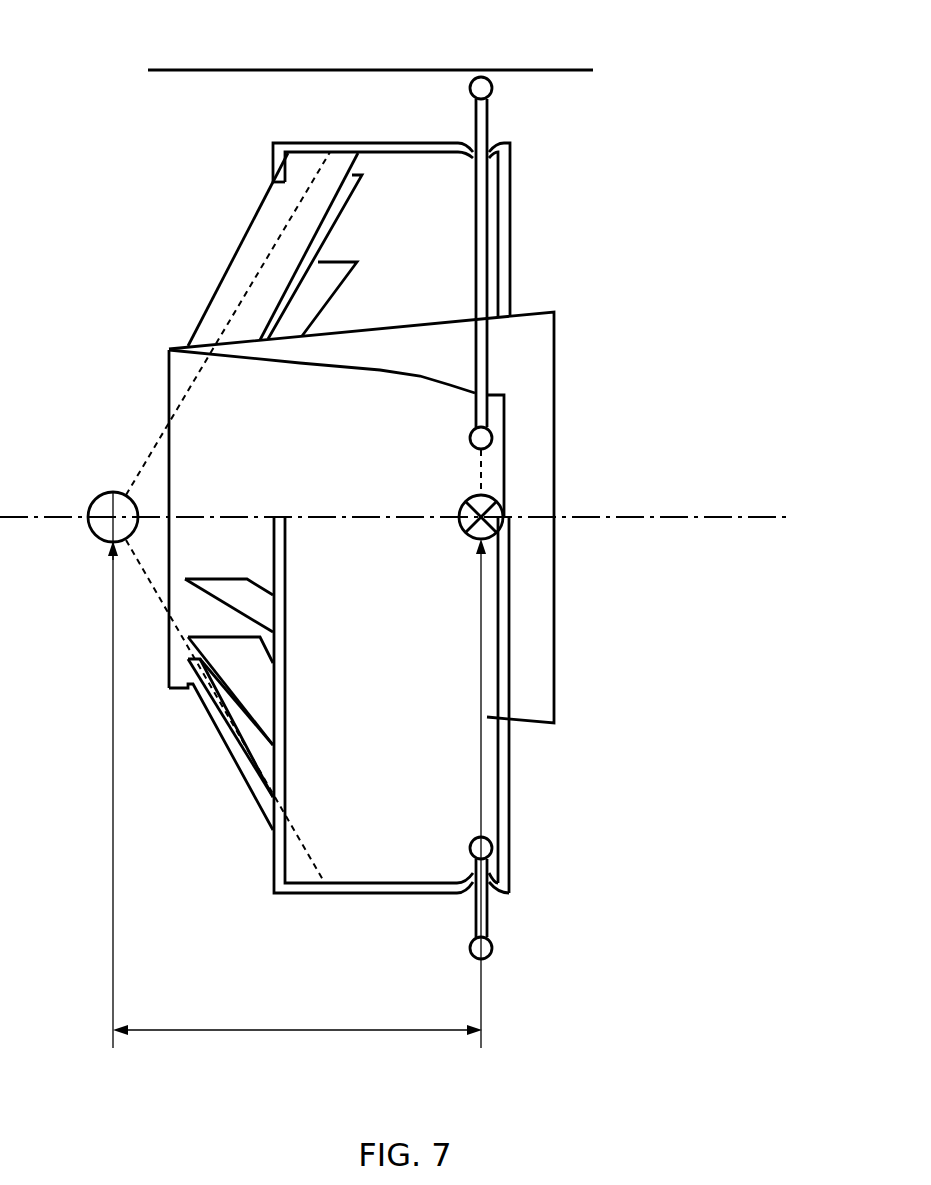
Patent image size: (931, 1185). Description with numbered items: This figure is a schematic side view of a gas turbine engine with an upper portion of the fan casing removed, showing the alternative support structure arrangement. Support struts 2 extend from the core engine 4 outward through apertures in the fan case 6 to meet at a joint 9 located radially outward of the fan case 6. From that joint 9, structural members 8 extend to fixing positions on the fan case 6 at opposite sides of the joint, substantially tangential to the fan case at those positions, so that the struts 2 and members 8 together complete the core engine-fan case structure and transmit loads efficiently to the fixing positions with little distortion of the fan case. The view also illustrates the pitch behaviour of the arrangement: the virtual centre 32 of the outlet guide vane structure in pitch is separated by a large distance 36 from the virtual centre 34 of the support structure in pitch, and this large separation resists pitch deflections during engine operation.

The support strut 2 is at (490, 122).
The core engine 4 is at (507, 462).
The fan case 6 is at (512, 813).
The structural member 8 is at (488, 910).
The joint 9 is at (480, 77).
The virtual centre of the OGV structure in pitch 32 is at (110, 512).
The virtual centre of the support structure in pitch 34 is at (505, 521).
The distance 36 is at (313, 1030).